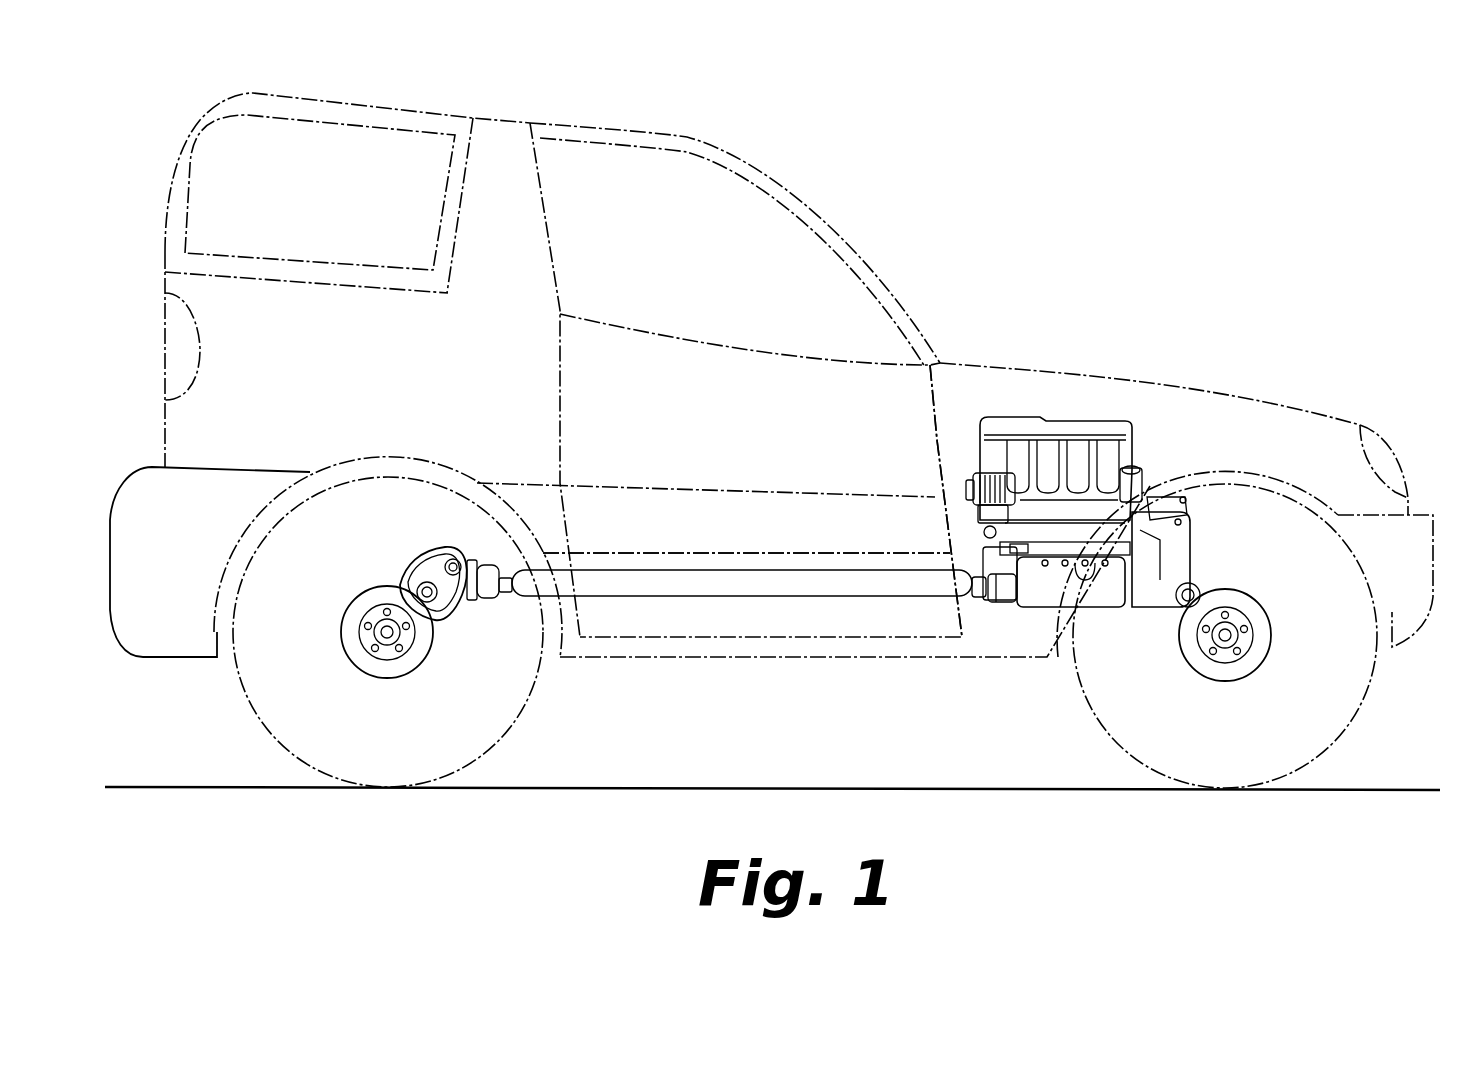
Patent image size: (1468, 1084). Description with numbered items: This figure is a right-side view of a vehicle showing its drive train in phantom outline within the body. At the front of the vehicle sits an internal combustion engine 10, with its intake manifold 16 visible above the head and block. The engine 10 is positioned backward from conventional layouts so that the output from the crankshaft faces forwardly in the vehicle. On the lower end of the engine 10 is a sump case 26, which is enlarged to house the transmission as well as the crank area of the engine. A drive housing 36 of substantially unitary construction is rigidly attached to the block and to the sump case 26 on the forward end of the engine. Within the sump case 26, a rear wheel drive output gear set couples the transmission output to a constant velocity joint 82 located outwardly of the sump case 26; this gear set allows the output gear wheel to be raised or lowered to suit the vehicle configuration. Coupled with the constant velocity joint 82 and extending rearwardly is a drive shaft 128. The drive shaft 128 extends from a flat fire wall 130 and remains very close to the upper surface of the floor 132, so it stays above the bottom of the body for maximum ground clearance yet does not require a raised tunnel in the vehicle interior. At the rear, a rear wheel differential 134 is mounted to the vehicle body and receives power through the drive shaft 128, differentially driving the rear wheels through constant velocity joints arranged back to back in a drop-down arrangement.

The internal combustion engine 10 is at (1104, 493).
The intake manifold 16 is at (1136, 470).
The sump case 26 is at (1090, 593).
The drive housing 36 is at (1180, 540).
The constant velocity joint 82 is at (995, 603).
The drive shaft 128 is at (877, 590).
The fire wall 130 is at (935, 440).
The floor 132 is at (722, 553).
The rear wheel differential 134 is at (473, 613).